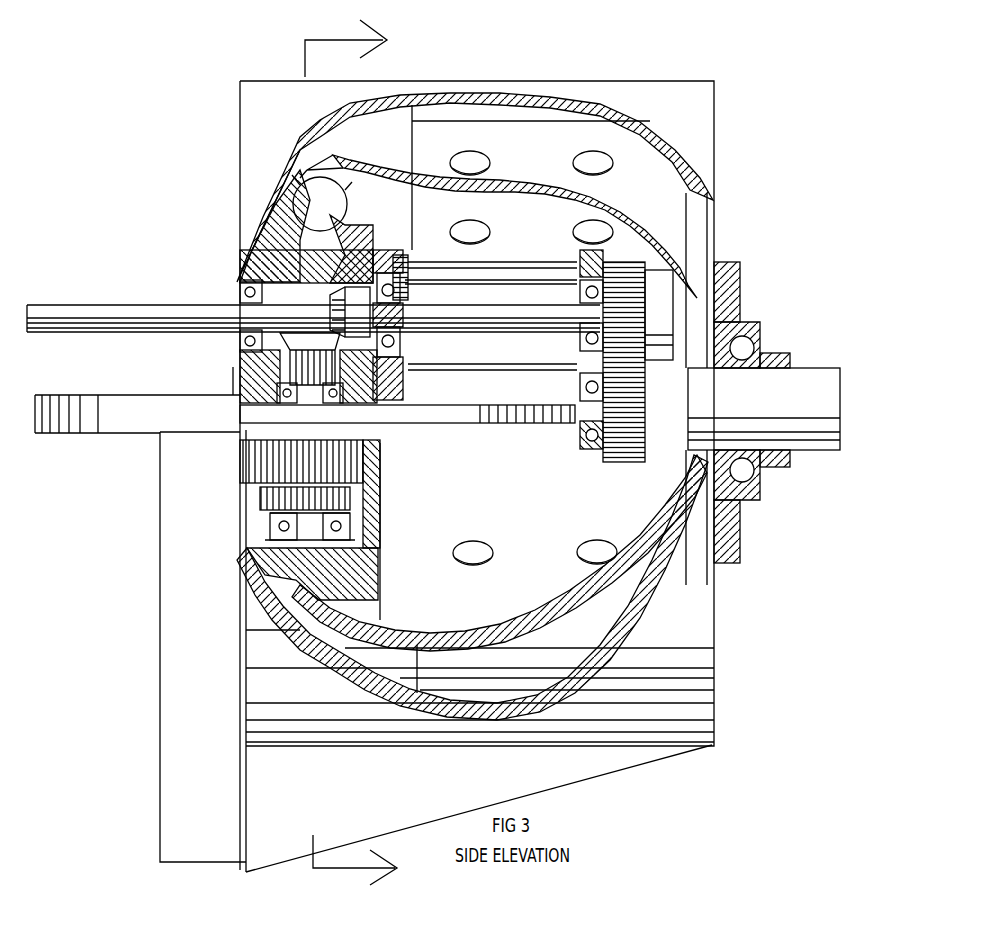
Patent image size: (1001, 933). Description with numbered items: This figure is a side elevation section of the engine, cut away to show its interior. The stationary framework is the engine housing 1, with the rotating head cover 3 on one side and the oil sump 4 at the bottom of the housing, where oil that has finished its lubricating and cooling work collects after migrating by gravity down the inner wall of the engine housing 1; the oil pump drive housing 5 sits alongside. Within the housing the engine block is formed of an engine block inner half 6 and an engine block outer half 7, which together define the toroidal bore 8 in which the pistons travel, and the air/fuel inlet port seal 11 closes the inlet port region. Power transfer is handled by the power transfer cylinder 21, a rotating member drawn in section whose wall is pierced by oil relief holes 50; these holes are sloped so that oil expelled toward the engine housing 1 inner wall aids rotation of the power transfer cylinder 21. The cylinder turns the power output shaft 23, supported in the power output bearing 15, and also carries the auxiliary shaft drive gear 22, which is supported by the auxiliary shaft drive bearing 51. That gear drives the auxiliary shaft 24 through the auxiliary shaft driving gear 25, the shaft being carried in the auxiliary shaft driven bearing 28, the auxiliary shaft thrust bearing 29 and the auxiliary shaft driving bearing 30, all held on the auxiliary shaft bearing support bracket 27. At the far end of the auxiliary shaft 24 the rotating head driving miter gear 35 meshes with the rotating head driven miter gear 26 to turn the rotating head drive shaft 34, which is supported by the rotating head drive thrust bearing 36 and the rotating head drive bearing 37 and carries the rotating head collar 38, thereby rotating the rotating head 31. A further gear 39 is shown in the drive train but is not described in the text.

The engine housing 1 is at (683, 103).
The rotating head cover 3 is at (118, 413).
The oil sump 4 is at (670, 832).
The oil pump drive housing 5 is at (195, 722).
The engine block inner half 6 is at (283, 237).
The engine block outer half 7 is at (283, 250).
The toroidal bore 8 is at (315, 188).
The air/fuel inlet port seal 11 is at (392, 127).
The power output bearing 15 is at (737, 330).
The power transfer cylinder 21 is at (647, 185).
The auxiliary shaft drive gear 22 is at (717, 463).
The power output shaft 23 is at (803, 402).
The auxiliary shaft 24 is at (78, 310).
The auxiliary shaft driving gear 25 is at (630, 307).
The rotating head driven miter gear 26 is at (330, 290).
The auxiliary shaft bearing support bracket 27 is at (598, 288).
The auxiliary shaft driven bearing 28 is at (647, 270).
The auxiliary shaft thrust bearing 29 is at (330, 262).
The auxiliary shaft driving bearing 30 is at (240, 290).
The rotating head 31 is at (300, 414).
The rotating head drive shaft 34 is at (240, 392).
The rotating head driving miter gear 35 is at (262, 345).
The rotating head drive thrust bearing 36 is at (290, 530).
The rotating head drive bearing 37 is at (233, 390).
The rotating head collar 38 is at (320, 428).
The gear 39 is at (300, 468).
The oil relief holes 50 is at (592, 232).
The auxiliary shaft drive bearing 51 is at (640, 460).